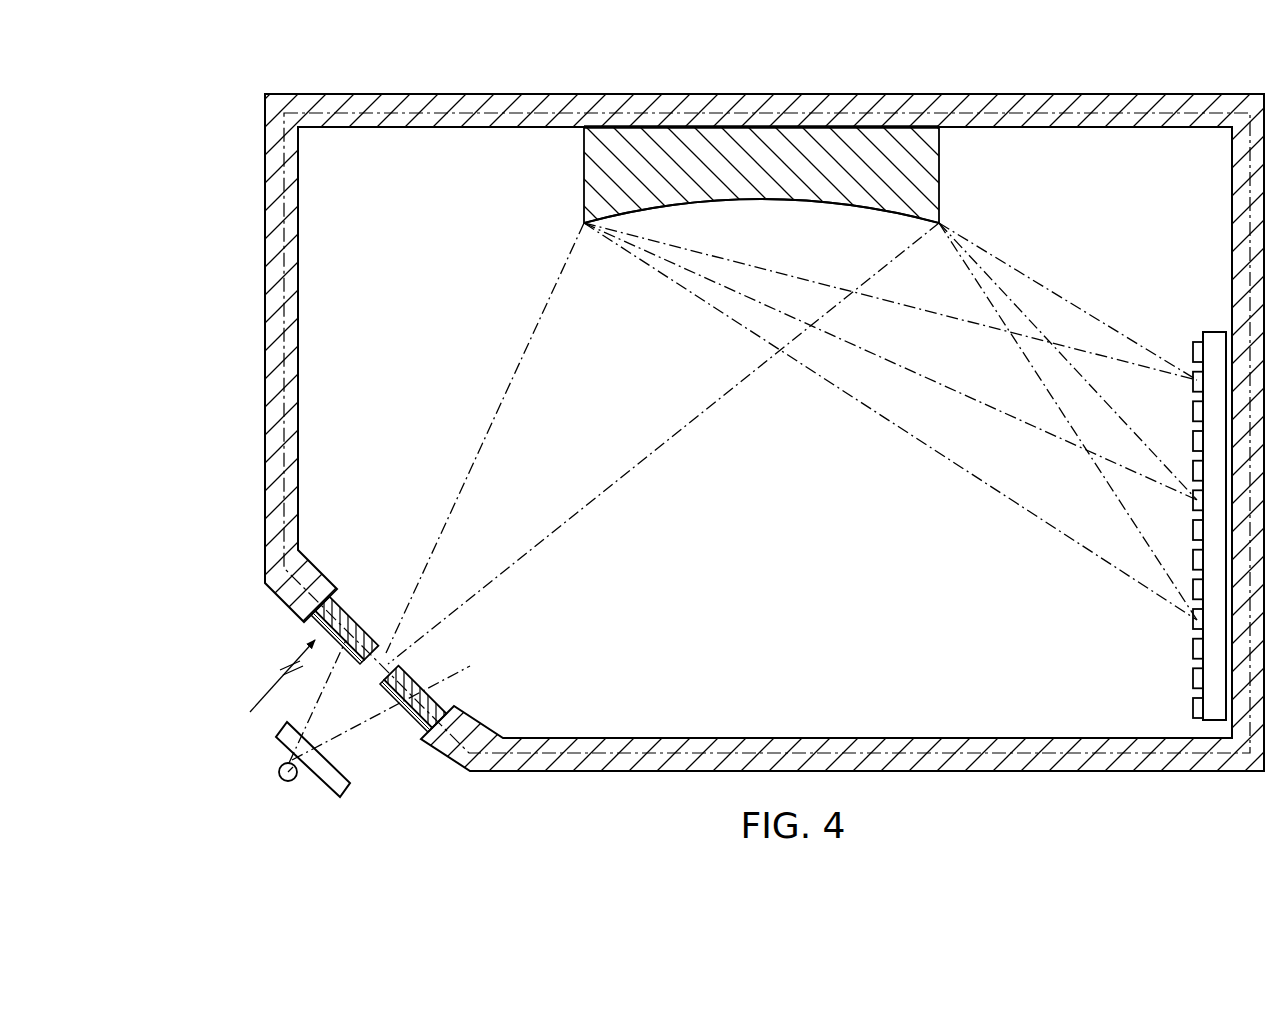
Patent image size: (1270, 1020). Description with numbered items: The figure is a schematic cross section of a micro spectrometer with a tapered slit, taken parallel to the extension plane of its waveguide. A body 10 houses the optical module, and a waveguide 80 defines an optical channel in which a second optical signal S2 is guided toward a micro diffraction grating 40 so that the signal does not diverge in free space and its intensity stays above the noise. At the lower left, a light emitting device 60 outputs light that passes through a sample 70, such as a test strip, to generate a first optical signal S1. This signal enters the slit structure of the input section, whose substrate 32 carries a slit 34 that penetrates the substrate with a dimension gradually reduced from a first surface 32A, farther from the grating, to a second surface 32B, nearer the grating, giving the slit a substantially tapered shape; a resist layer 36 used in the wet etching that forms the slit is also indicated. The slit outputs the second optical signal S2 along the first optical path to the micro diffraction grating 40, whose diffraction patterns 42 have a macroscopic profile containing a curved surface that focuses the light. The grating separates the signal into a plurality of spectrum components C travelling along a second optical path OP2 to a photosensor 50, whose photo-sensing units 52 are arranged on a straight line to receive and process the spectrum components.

The body 10 is at (446, 124).
The waveguide 80 is at (283, 347).
The micro diffraction grating 40 is at (903, 176).
The diffraction patterns 42 is at (760, 200).
The photosensor 50 is at (1215, 332).
The photo-sensing units 52 is at (1196, 343).
The spectrum components C is at (880, 303).
The second optical path OP2 is at (1032, 395).
The first optical signal S1 is at (317, 703).
The second optical signal S2 is at (604, 497).
The substrate 32 is at (416, 639).
The first surface 32A is at (440, 684).
The second surface 32B is at (420, 670).
The slit 34 is at (385, 660).
The resist layer 36 is at (432, 700).
The light emitting device 60 is at (279, 772).
The sample 70 is at (332, 778).